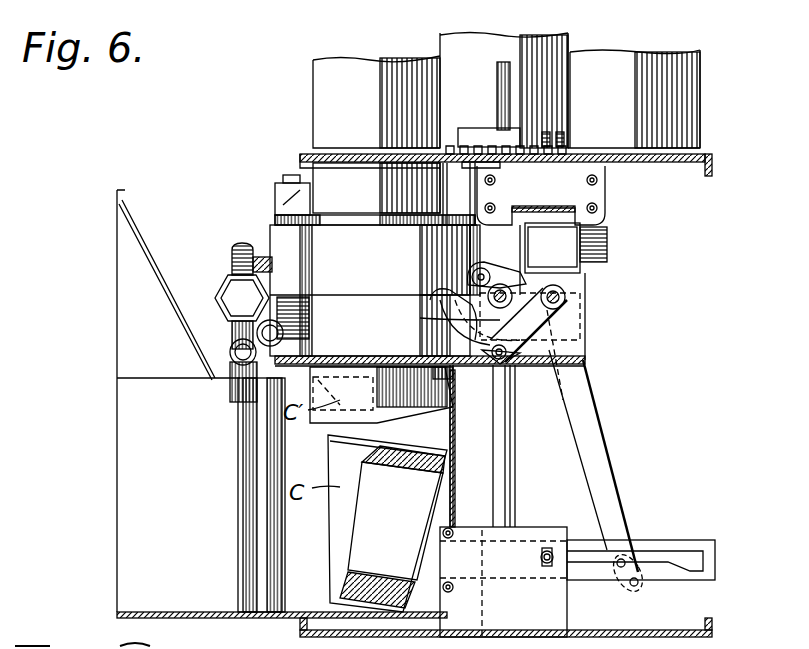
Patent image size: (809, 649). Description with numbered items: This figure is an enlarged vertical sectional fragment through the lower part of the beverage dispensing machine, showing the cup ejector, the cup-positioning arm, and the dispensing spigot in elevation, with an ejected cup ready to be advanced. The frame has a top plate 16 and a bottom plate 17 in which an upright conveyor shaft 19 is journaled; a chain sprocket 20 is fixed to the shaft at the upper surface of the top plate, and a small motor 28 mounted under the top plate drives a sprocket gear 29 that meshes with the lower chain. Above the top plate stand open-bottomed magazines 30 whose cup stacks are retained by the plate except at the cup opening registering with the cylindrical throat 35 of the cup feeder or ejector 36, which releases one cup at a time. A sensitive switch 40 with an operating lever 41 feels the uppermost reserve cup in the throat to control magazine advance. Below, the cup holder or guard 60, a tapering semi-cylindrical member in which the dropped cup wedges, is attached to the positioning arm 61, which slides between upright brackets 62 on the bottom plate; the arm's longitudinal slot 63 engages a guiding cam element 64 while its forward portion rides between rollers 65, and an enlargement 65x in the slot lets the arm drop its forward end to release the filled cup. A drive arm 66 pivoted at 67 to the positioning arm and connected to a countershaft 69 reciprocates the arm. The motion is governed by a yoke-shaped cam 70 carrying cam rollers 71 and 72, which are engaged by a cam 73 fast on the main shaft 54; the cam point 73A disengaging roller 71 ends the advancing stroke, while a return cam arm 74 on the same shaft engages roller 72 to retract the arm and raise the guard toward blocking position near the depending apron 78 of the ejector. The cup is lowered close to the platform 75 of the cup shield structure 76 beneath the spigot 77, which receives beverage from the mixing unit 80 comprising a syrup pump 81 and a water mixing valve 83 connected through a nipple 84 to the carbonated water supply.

The top plate 16 is at (690, 163).
The bottom plate 17 is at (676, 630).
The upright conveyor shaft 19 is at (500, 88).
The chain sprocket 20 is at (477, 108).
The motor 28 is at (608, 243).
The sprocket gear 29 is at (556, 147).
The magazine 30 is at (352, 107).
The cylindrical throat 35 is at (368, 203).
The cup feeder or ejector 36 is at (382, 273).
The sensitive switch 40 is at (278, 188).
The operating lever 41 is at (292, 178).
The main shaft 54 is at (538, 290).
The cup holder or guard 60 is at (410, 522).
The positioning arm 61 is at (690, 541).
The upright bracket 62 is at (556, 600).
The slot 63 is at (652, 548).
The guiding cam element 64 is at (552, 550).
The roller 65 is at (453, 532).
The enlargement 65x is at (695, 569).
The drive arm 66 is at (604, 470).
The pivot connection 67 is at (630, 595).
The countershaft 69 is at (566, 297).
The yoke-shaped cam 70 is at (545, 342).
The cam roller 71 is at (494, 271).
The cam roller 72 is at (490, 360).
The cam 73 is at (455, 312).
The cam point 73A is at (445, 297).
The return cam arm 74 is at (492, 322).
The platform 75 is at (248, 612).
The cup shield structure 76 is at (135, 418).
The spigot 77 is at (235, 385).
The depending apron 78 is at (328, 425).
The mixing unit 80 is at (215, 282).
The syrup pump 81 is at (292, 310).
The water mixing valve 83 is at (220, 298).
The nipple 84 is at (235, 262).